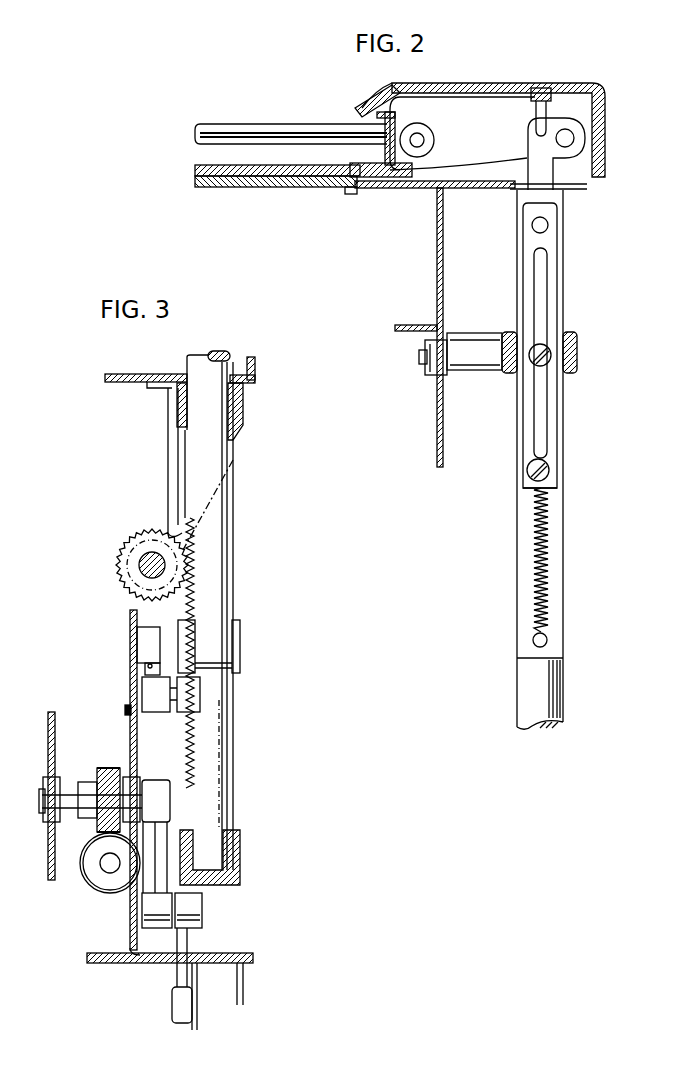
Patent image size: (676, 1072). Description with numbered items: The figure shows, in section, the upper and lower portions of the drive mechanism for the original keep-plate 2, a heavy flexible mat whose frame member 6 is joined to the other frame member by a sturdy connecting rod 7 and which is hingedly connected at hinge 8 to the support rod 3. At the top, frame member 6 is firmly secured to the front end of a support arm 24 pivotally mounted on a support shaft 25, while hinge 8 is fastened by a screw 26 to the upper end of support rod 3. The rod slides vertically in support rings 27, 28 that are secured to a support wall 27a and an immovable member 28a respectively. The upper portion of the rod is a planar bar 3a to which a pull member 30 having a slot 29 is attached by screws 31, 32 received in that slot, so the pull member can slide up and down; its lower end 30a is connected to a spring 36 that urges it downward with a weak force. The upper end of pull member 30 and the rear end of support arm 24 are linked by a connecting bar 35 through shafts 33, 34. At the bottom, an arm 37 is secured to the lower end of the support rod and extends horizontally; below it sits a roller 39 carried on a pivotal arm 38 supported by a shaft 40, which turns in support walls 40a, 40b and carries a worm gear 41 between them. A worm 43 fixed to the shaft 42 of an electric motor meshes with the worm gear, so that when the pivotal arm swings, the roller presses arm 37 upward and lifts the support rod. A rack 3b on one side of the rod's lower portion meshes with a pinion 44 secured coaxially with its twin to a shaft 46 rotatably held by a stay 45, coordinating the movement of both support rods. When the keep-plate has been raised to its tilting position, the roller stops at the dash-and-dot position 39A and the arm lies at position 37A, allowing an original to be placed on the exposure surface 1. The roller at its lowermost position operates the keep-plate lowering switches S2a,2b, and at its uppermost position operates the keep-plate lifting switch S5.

In FIG. 2, the exposure surface 1 is at (198, 184).
In FIG. 2, the original keep-plate 2 is at (198, 166).
In FIG. 2, the support rod 3 is at (556, 672).
In FIG. 2, the planar bar 3a is at (564, 278).
In FIG. 3, the rack 3b is at (200, 520).
In FIG. 2, the frame member 6 is at (372, 165).
In FIG. 2, the connecting rod 7 is at (268, 135).
In FIG. 2, the hinge 8 is at (505, 95).
In FIG. 2, the support arm 24 is at (470, 118).
In FIG. 2, the support shaft 25 is at (424, 140).
In FIG. 2, the screw 26 is at (541, 92).
In FIG. 2, the support ring 27 is at (505, 352).
In FIG. 2, the support wall 27a is at (443, 260).
In FIG. 3, the support ring 28 is at (243, 405).
In FIG. 3, the immovable member 28a is at (112, 383).
In FIG. 2, the slot 29 is at (545, 393).
In FIG. 2, the pull member 30 is at (558, 431).
In FIG. 2, the slide member end 30a is at (560, 490).
In FIG. 2, the screw 31 is at (545, 352).
In FIG. 2, the screw 32 is at (550, 470).
In FIG. 2, the shaft 33 is at (532, 225).
In FIG. 2, the shaft 34 is at (575, 140).
In FIG. 2, the connecting bar 35 is at (545, 198).
In FIG. 2, the spring 36 is at (550, 556).
In FIG. 3, the arm 37 is at (228, 855).
In FIG. 3, the arm position 37A is at (240, 642).
In FIG. 3, the pivotal arm 38 is at (150, 900).
In FIG. 3, the roller 39 is at (196, 908).
In FIG. 3, the roller position 39A is at (200, 700).
In FIG. 3, the shaft 40 is at (68, 795).
In FIG. 3, the support wall 40a is at (130, 680).
In FIG. 3, the support wall 40b is at (55, 712).
In FIG. 3, the worm gear 41 is at (110, 770).
In FIG. 3, the shaft 42 is at (105, 870).
In FIG. 3, the worm 43 is at (95, 843).
In FIG. 3, the pinion 44 is at (183, 530).
In FIG. 3, the stay 45 is at (172, 450).
In FIG. 3, the shaft 46 is at (135, 568).
In FIG. 3, the keep-plate lifting switch S5 is at (140, 640).
In FIG. 3, the keep-plate lowering switches S2a,2b is at (176, 1000).